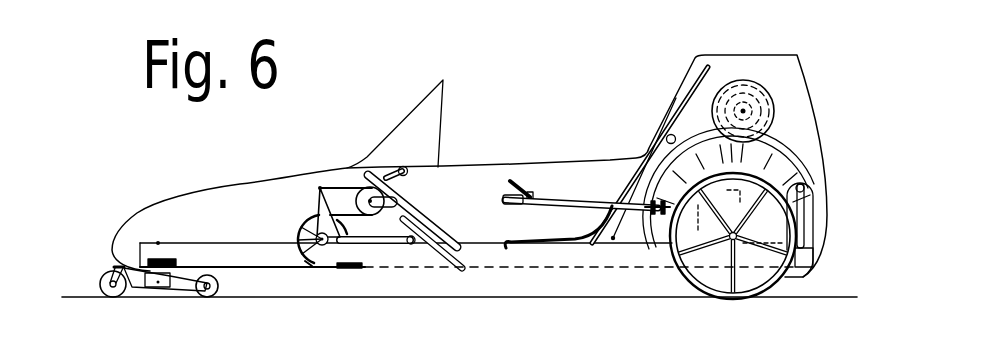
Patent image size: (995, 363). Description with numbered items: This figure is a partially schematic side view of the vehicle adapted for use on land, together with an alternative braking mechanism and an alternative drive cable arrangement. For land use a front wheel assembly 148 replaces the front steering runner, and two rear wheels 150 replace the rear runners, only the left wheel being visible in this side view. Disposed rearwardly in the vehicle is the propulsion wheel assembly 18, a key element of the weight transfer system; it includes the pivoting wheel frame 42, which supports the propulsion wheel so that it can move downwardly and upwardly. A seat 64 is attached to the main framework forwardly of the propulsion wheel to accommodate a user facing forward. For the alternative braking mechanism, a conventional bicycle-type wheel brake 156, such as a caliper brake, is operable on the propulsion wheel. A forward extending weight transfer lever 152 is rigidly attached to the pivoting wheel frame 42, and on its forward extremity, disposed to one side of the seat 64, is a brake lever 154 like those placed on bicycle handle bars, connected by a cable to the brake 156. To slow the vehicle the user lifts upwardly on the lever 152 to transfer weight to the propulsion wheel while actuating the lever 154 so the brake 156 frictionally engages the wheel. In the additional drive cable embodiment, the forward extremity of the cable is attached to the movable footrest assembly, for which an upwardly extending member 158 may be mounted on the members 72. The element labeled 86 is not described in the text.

The propulsion wheel assembly 18 is at (494, 166).
The front wheel assembly 148 is at (131, 270).
The crank housing 86 is at (332, 182).
The upwardly extending member 158 is at (294, 215).
The members 72 is at (335, 254).
The brake lever 154 is at (490, 169).
The weight transfer lever 152 is at (580, 188).
The wheel brake 156 is at (623, 173).
The seat 64 is at (542, 226).
The pivoting wheel frame 42 is at (582, 281).
The rear wheels 150 is at (761, 236).